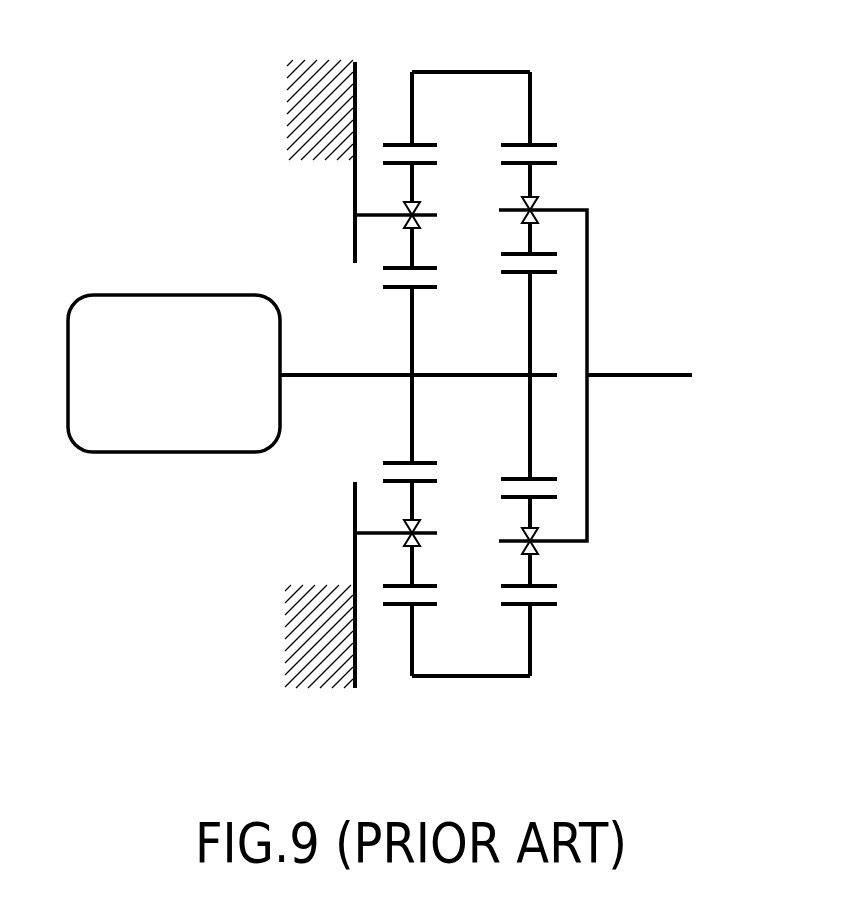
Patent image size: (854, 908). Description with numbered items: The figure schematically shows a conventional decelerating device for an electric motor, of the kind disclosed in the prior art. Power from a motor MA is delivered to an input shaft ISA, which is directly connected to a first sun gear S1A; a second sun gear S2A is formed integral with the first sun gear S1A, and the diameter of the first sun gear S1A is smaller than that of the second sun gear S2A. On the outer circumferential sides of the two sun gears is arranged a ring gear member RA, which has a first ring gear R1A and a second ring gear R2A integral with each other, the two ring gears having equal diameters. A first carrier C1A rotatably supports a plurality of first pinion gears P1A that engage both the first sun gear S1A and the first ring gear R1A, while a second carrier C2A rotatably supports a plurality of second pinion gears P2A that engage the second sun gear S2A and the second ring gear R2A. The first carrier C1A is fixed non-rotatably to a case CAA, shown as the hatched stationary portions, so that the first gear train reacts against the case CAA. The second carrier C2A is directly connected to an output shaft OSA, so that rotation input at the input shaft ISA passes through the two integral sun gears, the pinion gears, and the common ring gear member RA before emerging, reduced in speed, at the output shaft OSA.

The motor MA is at (151, 453).
The input shaft ISA is at (337, 373).
The output shaft OSA is at (667, 375).
The case CAA is at (291, 90).
The ring gear member RA is at (531, 71).
The first ring gear R1A is at (395, 142).
The first pinion gears P1A is at (432, 164).
The first sun gear S1A is at (437, 288).
The first carrier C1A is at (377, 214).
The second ring gear R2A is at (550, 146).
The second pinion gears P2A is at (552, 165).
The second sun gear S2A is at (544, 273).
The second carrier C2A is at (561, 210).